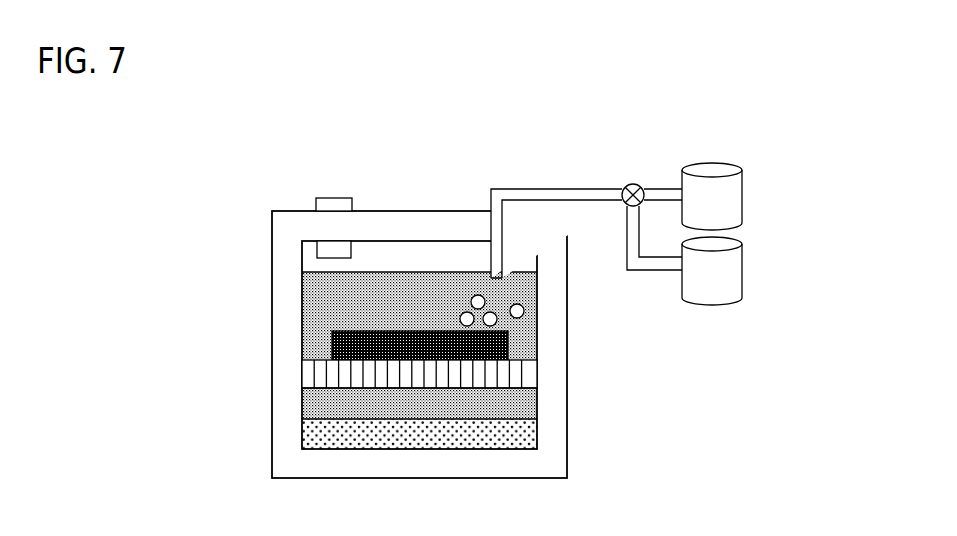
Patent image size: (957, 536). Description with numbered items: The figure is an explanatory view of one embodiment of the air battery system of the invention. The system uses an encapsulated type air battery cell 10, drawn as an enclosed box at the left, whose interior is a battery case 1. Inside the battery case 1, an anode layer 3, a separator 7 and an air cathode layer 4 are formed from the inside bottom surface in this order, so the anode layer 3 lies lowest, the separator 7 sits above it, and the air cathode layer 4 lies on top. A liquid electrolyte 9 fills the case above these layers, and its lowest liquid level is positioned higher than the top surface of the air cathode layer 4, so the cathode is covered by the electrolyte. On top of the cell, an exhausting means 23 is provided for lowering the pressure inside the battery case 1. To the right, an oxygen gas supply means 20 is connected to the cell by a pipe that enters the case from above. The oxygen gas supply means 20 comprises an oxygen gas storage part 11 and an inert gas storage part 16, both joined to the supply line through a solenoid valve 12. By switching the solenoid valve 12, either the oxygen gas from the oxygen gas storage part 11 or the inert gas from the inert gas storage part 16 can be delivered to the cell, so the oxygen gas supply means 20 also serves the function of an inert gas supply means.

The battery case 1 is at (545, 462).
The anode layer 3 is at (515, 432).
The air cathode layer 4 is at (508, 342).
The separator 7 is at (515, 372).
The liquid electrolyte 9 is at (515, 323).
The air battery cell 10 is at (257, 211).
The oxygen gas storage part 11 is at (712, 170).
The solenoid valve 12 is at (633, 179).
The inert gas storage part 16 is at (712, 293).
The oxygen gas supply means 20 is at (661, 225).
The exhausting means 23 is at (332, 199).